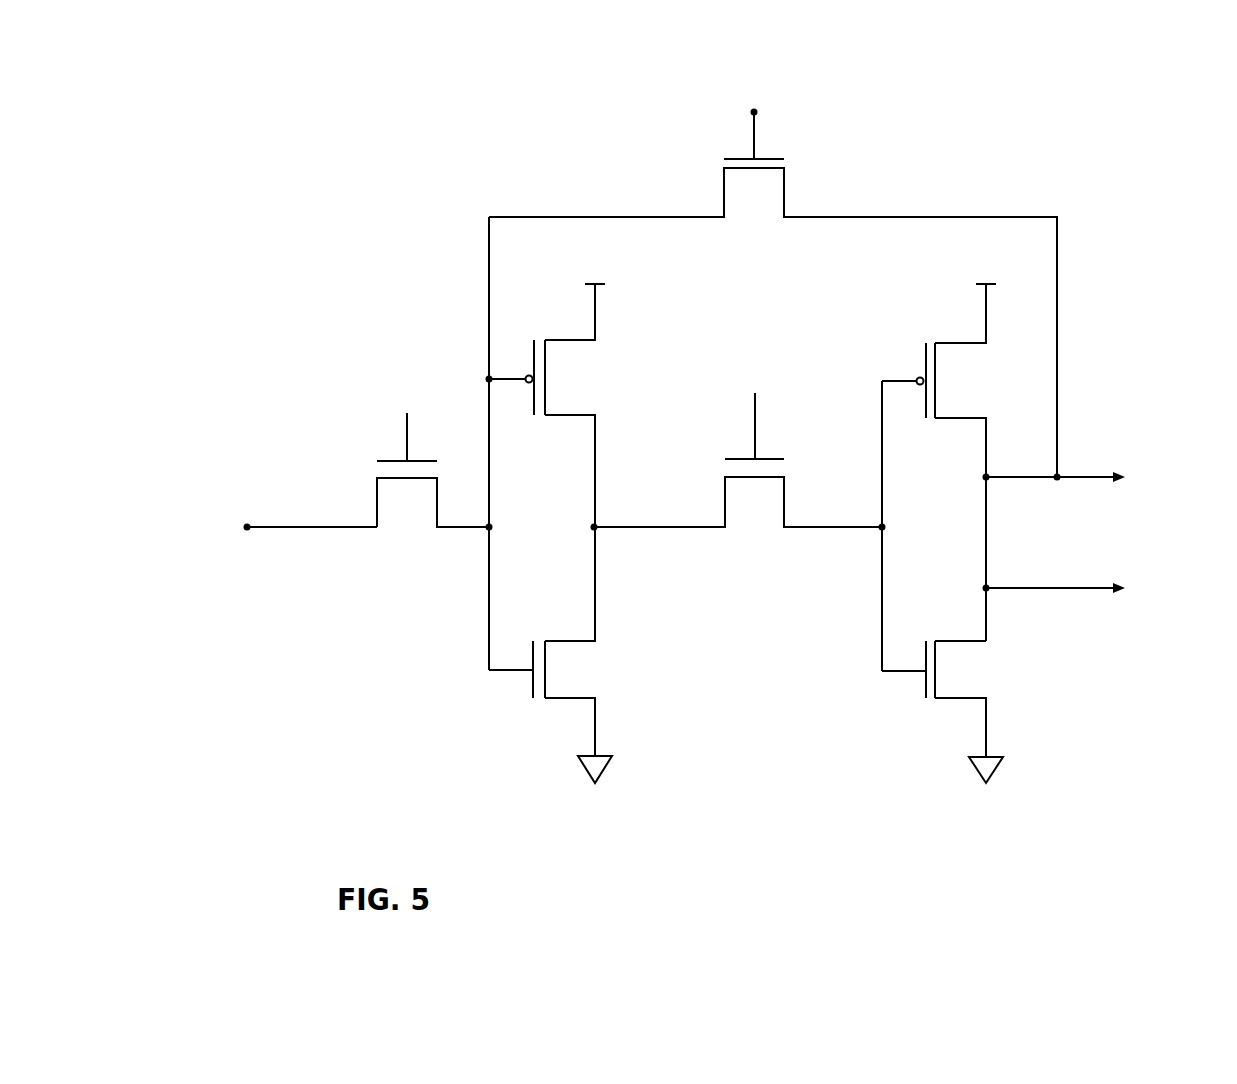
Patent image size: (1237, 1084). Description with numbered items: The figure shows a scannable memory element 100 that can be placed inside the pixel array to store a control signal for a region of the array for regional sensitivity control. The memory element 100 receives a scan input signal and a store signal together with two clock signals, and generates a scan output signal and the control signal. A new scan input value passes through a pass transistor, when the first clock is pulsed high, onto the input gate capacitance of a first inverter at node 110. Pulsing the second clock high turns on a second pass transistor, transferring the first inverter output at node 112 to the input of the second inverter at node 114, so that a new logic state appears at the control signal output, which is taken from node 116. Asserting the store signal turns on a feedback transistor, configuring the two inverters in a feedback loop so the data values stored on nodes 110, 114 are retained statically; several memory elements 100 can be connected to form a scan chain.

The memory element 100 is at (1091, 172).
The node 110 is at (496, 527).
The node 112 is at (596, 524).
The node 114 is at (884, 524).
The CG output node 116 is at (988, 585).